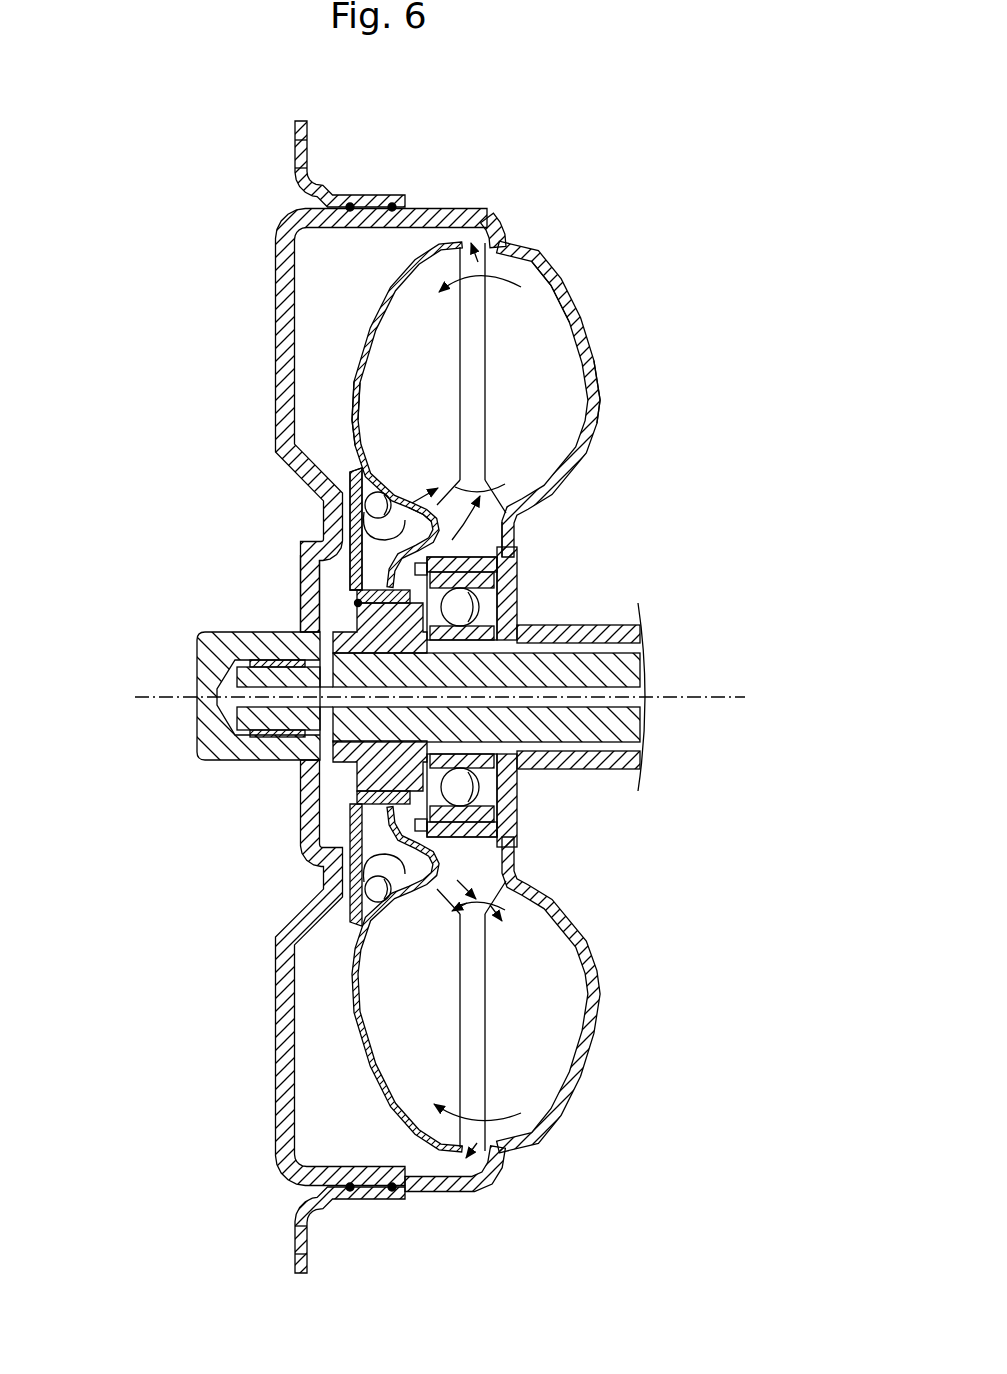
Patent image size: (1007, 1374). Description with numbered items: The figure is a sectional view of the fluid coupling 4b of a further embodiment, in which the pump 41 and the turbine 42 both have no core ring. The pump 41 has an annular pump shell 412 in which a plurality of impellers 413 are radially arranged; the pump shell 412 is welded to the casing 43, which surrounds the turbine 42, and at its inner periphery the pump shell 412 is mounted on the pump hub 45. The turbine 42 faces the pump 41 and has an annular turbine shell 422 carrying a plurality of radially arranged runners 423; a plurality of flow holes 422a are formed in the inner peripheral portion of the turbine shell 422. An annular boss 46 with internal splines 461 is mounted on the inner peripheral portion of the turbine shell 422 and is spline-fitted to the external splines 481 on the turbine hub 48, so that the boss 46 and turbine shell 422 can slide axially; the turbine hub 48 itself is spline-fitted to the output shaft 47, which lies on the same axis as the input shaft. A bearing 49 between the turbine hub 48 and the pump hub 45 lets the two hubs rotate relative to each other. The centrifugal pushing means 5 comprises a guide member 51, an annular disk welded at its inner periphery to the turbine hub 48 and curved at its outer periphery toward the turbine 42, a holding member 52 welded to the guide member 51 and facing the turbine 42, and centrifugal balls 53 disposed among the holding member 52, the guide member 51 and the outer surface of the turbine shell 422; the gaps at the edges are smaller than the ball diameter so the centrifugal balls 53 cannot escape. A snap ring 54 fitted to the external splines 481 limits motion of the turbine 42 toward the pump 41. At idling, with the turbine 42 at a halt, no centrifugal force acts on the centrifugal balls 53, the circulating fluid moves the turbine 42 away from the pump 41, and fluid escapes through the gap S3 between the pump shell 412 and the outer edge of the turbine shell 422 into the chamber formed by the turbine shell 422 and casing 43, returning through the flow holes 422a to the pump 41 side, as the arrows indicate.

The fluid coupling 4b is at (543, 208).
The pump 41 is at (558, 250).
The impellers 413 is at (543, 300).
The pump shell 412 is at (600, 386).
The turbine 42 is at (376, 299).
The casing 43 is at (285, 300).
The turbine shell 422 is at (358, 365).
The runners 423 is at (375, 400).
The flow holes 422a is at (430, 503).
The centrifugal pushing means 5 is at (331, 468).
The guide member 51 is at (354, 492).
The centrifugal balls 53 is at (372, 512).
The holding member 52 is at (395, 528).
The boss 46 is at (360, 590).
The pump hub 45 is at (517, 568).
The internal splines 461 is at (358, 603).
The bearing 49 is at (480, 608).
The external splines 481 is at (360, 626).
The turbine hub 48 is at (360, 645).
The snap ring 54 is at (358, 790).
The output shaft 47 is at (595, 735).
The gap S3 is at (477, 1157).